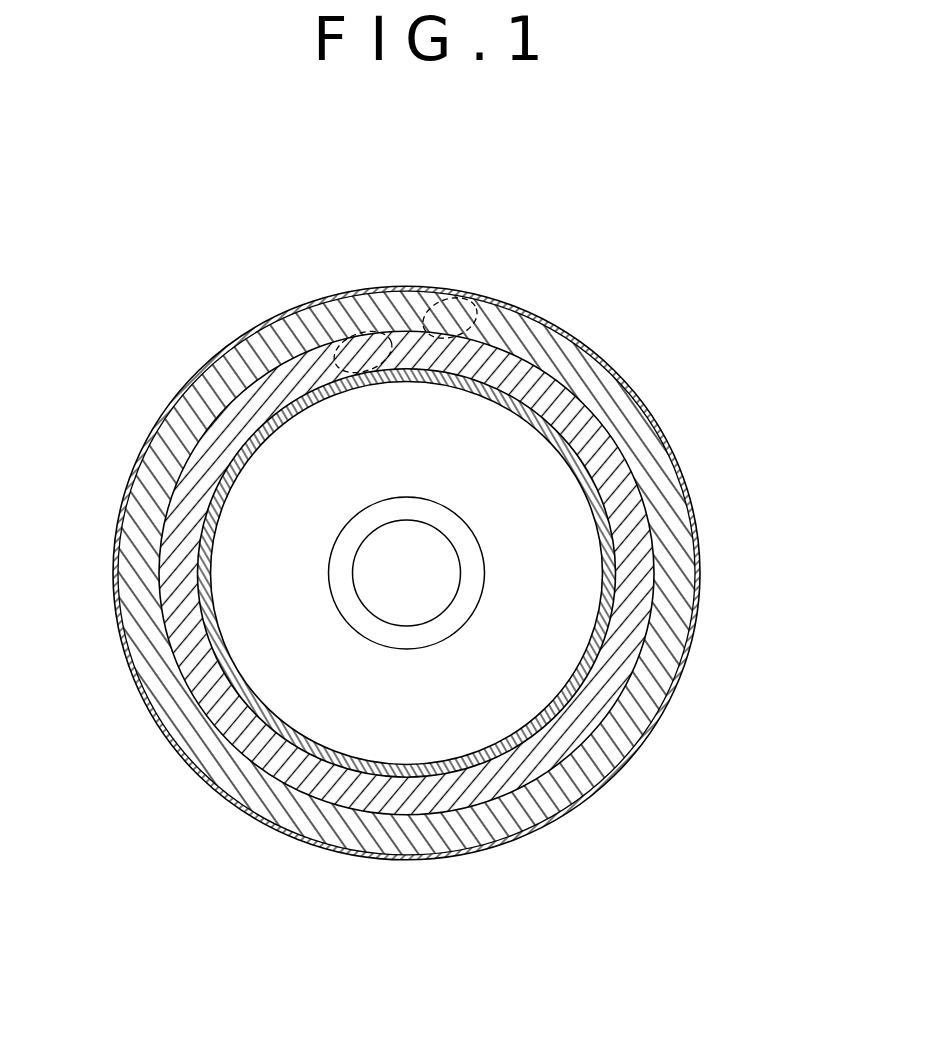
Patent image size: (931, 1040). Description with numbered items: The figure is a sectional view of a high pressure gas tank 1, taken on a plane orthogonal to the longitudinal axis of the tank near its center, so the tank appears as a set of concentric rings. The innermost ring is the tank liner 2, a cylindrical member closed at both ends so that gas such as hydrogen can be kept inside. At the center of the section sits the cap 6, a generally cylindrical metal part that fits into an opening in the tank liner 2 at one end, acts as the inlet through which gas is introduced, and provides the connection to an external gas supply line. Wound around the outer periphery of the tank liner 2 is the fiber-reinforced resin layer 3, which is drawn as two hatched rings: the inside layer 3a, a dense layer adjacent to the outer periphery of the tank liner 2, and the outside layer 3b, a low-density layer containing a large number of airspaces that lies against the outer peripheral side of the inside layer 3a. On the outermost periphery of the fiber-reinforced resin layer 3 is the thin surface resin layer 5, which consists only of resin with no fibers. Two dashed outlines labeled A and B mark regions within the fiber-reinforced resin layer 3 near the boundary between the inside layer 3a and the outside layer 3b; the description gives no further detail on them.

The high pressure gas tank 1 is at (82, 292).
The tank liner 2 is at (557, 446).
The fiber-reinforced resin layer 3 is at (783, 445).
The inside layer 3a is at (630, 487).
The outside layer 3b is at (688, 502).
The surface resin layer 5 is at (697, 619).
The cap 6 is at (468, 606).
The region A is at (458, 292).
The region B is at (378, 338).